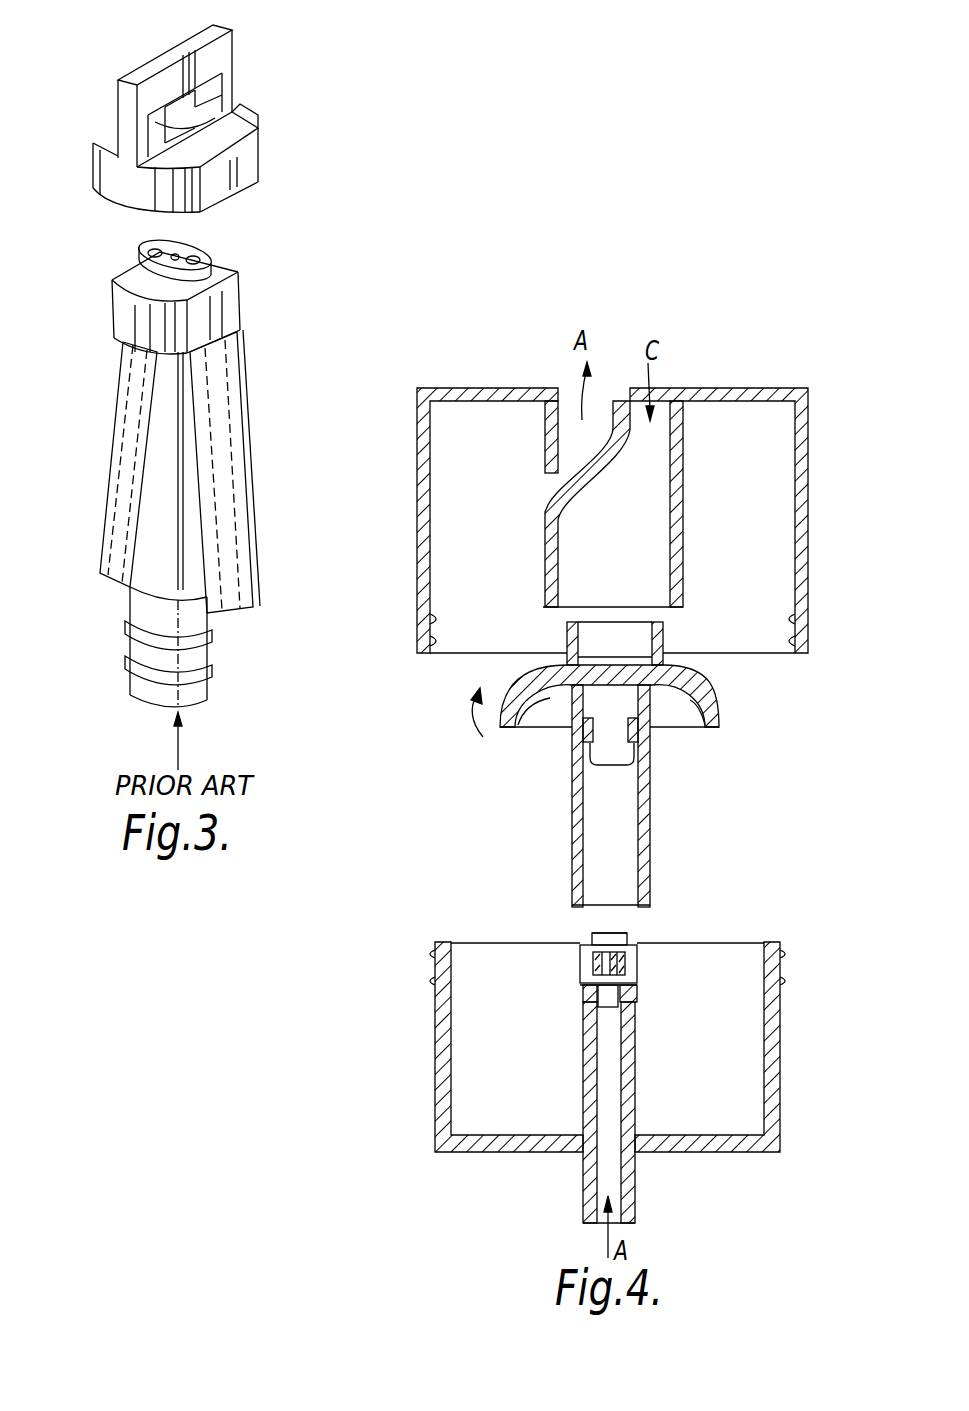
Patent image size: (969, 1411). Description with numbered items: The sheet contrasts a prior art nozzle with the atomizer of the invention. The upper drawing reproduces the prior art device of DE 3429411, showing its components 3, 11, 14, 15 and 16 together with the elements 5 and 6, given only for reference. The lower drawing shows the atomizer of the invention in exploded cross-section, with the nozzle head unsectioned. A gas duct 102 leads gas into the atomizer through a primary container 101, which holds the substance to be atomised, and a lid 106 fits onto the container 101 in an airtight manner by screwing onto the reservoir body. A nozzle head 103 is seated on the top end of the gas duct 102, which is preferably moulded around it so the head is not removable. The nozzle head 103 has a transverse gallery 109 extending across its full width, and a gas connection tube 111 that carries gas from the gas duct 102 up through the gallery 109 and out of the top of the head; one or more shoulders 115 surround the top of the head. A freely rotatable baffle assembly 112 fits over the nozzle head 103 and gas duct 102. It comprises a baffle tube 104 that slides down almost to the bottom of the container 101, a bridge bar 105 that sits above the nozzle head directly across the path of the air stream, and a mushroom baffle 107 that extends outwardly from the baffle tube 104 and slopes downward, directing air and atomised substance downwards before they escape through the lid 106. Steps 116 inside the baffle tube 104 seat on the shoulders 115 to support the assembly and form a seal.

In FIG. 3, the prior art atomizer component 3 is at (165, 115).
In FIG. 3, the prior art component 11 is at (165, 85).
In FIG. 3, the prior art component 14 is at (120, 186).
In FIG. 3, the prior art component 15 is at (236, 112).
In FIG. 3, the prior art component 16 is at (130, 310).
In FIG. 3, the prior art component 5 is at (123, 510).
In FIG. 3, the prior art component 6 is at (240, 518).
In FIG. 4, the primary container 101 is at (435, 1087).
In FIG. 4, the gas duct 102 is at (608, 1072).
In FIG. 4, the nozzle head 103 is at (640, 963).
In FIG. 4, the baffle tube 104 is at (652, 818).
In FIG. 4, the bridge bar 105 is at (558, 706).
In FIG. 4, the lid 106 is at (802, 492).
In FIG. 4, the mushroom baffle 107 is at (713, 706).
In FIG. 4, the transverse gallery 109 is at (595, 962).
In FIG. 4, the gas connection tube 111 is at (630, 950).
In FIG. 4, the baffle assembly 112 is at (653, 786).
In FIG. 4, the shoulder 115 is at (590, 945).
In FIG. 4, the step 116 is at (647, 738).